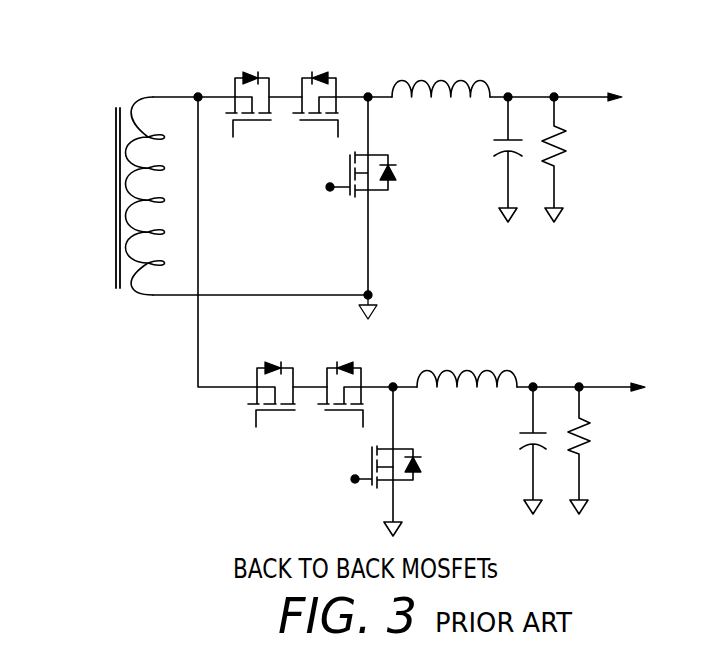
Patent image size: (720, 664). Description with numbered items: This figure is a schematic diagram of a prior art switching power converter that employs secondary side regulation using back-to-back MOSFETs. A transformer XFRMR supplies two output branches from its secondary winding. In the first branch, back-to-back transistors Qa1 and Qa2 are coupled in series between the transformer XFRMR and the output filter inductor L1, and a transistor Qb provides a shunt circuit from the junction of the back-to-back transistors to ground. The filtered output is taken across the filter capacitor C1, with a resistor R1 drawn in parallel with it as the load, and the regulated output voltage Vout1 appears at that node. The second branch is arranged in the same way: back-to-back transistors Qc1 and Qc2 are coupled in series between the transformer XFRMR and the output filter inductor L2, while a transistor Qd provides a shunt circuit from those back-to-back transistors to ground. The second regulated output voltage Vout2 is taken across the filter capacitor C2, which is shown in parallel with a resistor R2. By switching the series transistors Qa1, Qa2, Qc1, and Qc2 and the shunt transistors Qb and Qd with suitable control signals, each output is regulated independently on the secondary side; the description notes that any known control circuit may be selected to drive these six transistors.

The transformer XFRMR is at (98, 196).
The back-to-back transistor Qa1 is at (235, 72).
The back-to-back transistor Qa2 is at (331, 70).
The transistor Qb is at (345, 196).
The output filter inductor L1 is at (441, 73).
The filter capacitor C1 is at (491, 159).
The resistor R1 is at (568, 159).
The regulated output voltage Vout1 is at (622, 88).
The back-to-back transistor Qc1 is at (287, 366).
The back-to-back transistor Qc2 is at (343, 368).
The transistor Qd is at (368, 495).
The output filter inductor L2 is at (467, 363).
The filter capacitor C2 is at (514, 450).
The resistor R2 is at (595, 450).
The regulated output voltage Vout2 is at (649, 380).